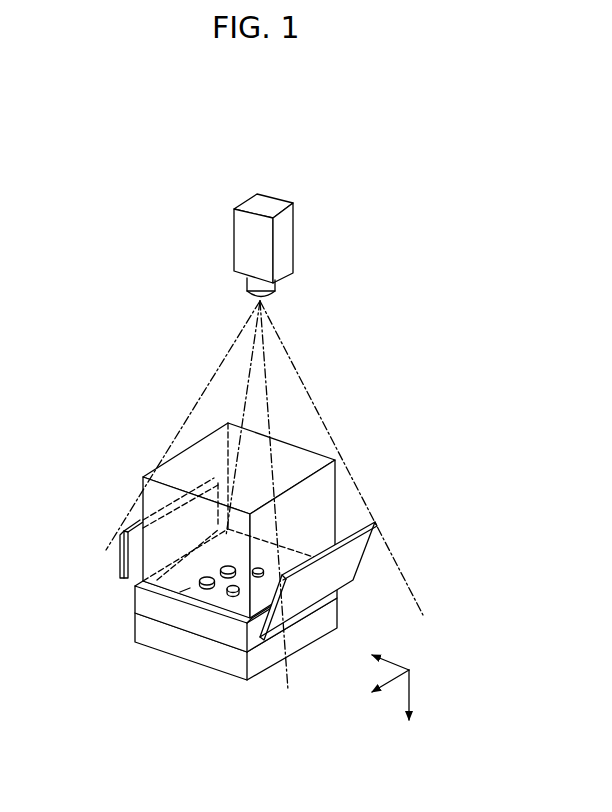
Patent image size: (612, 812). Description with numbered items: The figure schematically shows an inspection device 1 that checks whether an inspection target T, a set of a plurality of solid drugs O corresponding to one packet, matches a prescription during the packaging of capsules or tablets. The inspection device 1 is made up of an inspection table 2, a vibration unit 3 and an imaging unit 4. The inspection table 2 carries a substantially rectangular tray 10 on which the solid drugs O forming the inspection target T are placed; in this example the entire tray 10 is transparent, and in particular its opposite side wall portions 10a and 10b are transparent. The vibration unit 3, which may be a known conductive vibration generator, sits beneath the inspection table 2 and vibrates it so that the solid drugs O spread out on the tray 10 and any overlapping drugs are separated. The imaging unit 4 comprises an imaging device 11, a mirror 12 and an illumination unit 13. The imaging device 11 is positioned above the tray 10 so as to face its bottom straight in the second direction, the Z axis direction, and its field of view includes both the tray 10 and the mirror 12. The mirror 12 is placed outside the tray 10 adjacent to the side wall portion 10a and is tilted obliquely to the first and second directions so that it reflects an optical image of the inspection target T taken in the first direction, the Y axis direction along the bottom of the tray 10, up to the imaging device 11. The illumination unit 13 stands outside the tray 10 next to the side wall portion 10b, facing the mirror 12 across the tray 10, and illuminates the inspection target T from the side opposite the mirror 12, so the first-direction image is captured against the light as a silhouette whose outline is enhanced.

The inspection device 1 is at (74, 227).
The inspection table 2 is at (128, 598).
The vibration unit 3 is at (220, 664).
The imaging unit 4 is at (290, 193).
The tray 10 is at (282, 445).
The side wall portion 10a is at (328, 500).
The side wall portion 10b is at (200, 458).
The imaging device 11 is at (288, 233).
The mirror 12 is at (366, 553).
The illumination unit 13 is at (113, 549).
The inspection target T is at (185, 590).
The solid drugs O is at (232, 593).